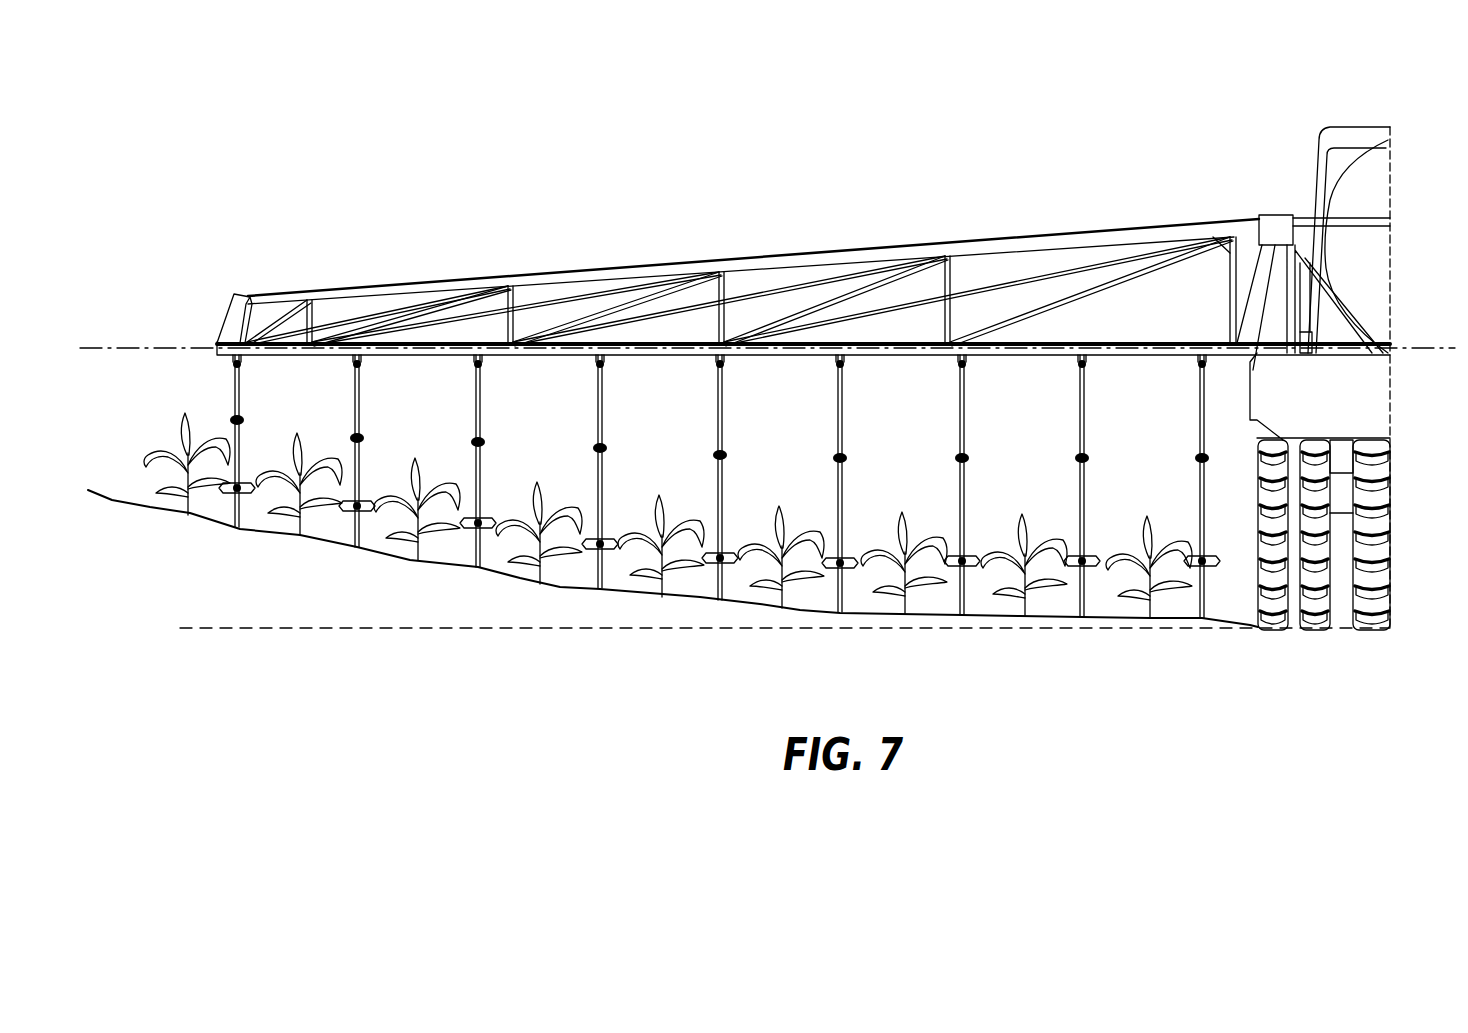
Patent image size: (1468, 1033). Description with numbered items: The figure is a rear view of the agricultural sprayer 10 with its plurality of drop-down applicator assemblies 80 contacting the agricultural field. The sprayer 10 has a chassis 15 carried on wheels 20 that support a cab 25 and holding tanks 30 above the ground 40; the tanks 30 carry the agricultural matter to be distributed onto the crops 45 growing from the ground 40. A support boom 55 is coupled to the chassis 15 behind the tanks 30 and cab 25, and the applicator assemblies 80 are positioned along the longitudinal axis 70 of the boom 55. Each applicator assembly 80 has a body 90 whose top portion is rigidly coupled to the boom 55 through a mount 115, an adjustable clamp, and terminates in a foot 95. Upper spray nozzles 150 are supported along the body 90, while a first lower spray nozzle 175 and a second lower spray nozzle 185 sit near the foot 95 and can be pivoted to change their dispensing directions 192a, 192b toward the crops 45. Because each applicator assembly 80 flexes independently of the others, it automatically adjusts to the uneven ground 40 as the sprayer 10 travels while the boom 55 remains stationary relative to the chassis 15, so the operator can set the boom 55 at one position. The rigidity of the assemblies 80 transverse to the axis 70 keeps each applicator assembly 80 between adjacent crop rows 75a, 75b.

The agricultural sprayer 10 is at (1013, 120).
The chassis 15 is at (1342, 500).
The wheels 20 is at (1282, 603).
The cab 25 is at (1350, 135).
The holding tanks 30 is at (1337, 182).
The ground 40 is at (135, 498).
The crops 45 is at (185, 512).
The support boom 55 is at (803, 352).
The longitudinal axis 70 is at (160, 347).
The crop row 75a is at (1037, 633).
The crop row 75b is at (900, 633).
The drop-down applicator assembly 80 is at (687, 473).
The body 90 is at (722, 422).
The foot 95 is at (717, 583).
The mount 115 is at (715, 352).
The upper spray nozzles 150 is at (862, 453).
The first lower spray nozzle 175 is at (1068, 542).
The second lower spray nozzle 185 is at (1103, 547).
The dispensing direction 192a is at (197, 508).
The dispensing direction 192b is at (273, 513).